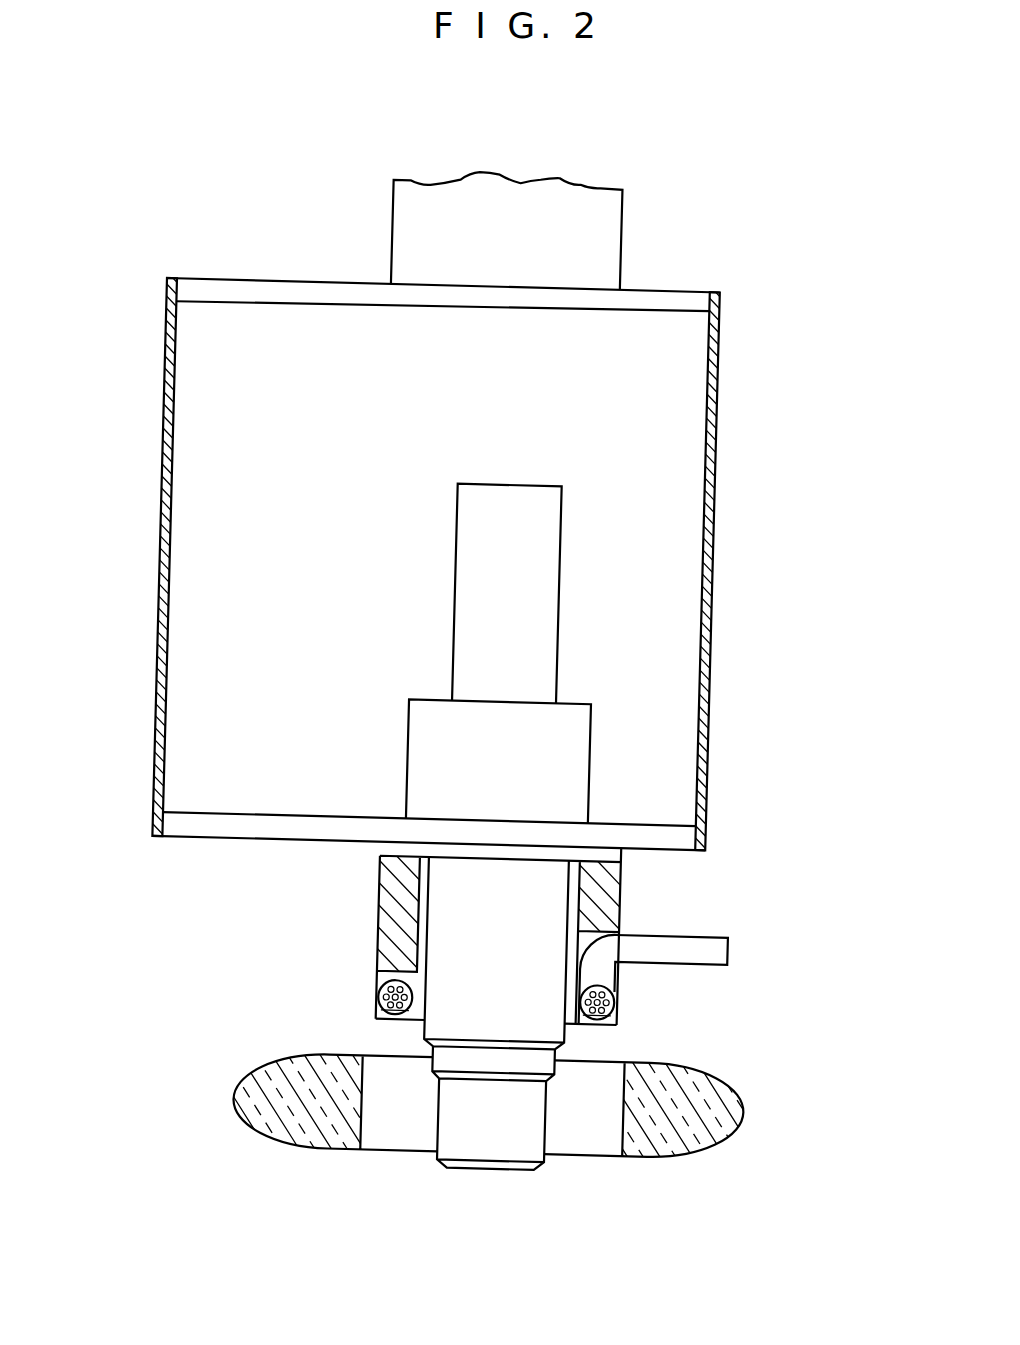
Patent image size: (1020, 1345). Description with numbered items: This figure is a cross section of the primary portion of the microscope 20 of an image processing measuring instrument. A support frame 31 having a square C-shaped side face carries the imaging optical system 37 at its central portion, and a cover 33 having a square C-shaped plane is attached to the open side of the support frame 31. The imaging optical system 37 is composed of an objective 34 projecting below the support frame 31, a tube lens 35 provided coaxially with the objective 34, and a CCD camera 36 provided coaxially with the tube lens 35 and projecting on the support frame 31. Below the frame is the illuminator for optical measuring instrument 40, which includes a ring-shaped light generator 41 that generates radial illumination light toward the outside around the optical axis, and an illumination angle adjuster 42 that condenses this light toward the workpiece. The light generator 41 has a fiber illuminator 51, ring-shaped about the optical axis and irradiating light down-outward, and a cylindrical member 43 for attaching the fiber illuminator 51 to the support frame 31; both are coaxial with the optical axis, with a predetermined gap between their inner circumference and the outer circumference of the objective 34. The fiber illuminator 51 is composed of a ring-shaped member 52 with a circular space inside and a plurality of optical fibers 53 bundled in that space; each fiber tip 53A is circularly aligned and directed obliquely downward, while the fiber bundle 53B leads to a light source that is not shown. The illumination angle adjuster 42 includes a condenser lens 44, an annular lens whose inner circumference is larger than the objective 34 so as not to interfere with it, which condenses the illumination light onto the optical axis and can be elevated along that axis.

The microscope 20 is at (152, 316).
The support frame 31 is at (690, 300).
The cover 33 is at (718, 452).
The objective 34 is at (548, 1143).
The tube lens 35 is at (545, 565).
The CCD camera 36 is at (606, 231).
The imaging optical system 37 is at (592, 458).
The illuminator for optical measuring instrument 40 is at (476, 952).
The light generator 41 is at (425, 933).
The illumination angle adjuster 42 is at (481, 1117).
The cylindrical member 43 is at (390, 912).
The condenser lens 44 is at (695, 1150).
The fiber illuminator 51 is at (360, 993).
The ring-shaped member 52 is at (598, 1023).
The optical fiber 53 is at (612, 992).
The fiber tip 53A is at (380, 1012).
The fiber bundle 53B is at (712, 945).